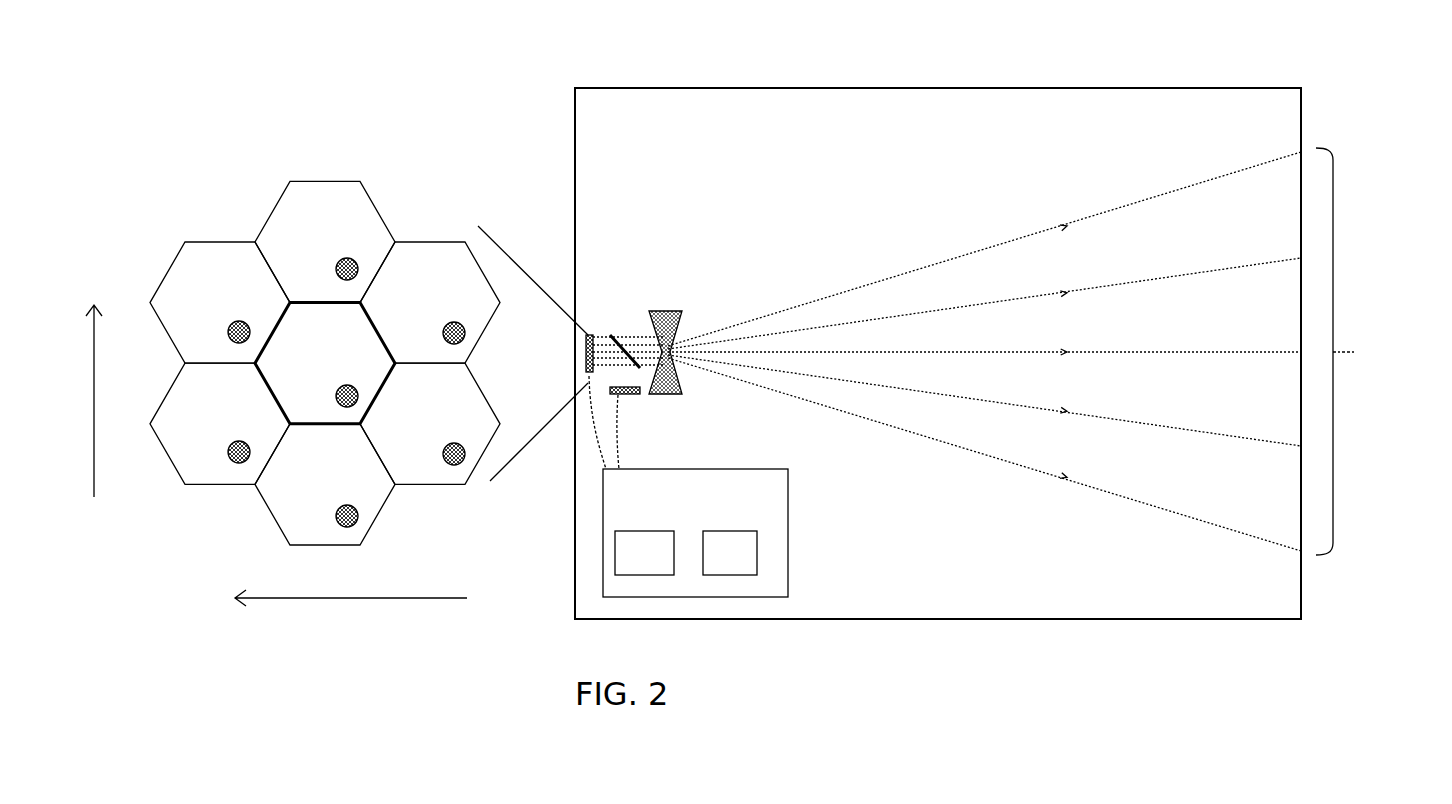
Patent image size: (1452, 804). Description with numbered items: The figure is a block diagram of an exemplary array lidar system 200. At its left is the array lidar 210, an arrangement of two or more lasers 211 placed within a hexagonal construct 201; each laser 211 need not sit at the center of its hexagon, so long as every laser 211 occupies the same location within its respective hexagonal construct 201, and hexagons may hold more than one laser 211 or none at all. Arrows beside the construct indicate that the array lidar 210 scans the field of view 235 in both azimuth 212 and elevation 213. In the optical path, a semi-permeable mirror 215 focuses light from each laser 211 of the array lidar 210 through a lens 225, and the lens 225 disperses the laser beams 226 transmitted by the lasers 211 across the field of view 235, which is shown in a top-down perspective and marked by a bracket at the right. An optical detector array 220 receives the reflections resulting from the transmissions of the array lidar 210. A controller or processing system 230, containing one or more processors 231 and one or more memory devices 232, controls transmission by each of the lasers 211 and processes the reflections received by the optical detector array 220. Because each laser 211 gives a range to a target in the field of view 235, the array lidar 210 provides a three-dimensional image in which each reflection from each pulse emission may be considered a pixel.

The array lidar system 200 is at (1144, 52).
The hexagonal construct 201 is at (344, 181).
The array lidar 210 is at (583, 324).
The lasers 211 is at (327, 261).
The azimuth 212 is at (109, 401).
The elevation 213 is at (351, 612).
The semi-permeable mirror 215 is at (615, 325).
The optical detector array 220 is at (635, 405).
The lens 225 is at (681, 300).
The laser beams 226 is at (926, 245).
The processing system 230 is at (695, 533).
The processors 231 is at (644, 553).
The memory devices 232 is at (730, 553).
The field of view 235 is at (1362, 351).